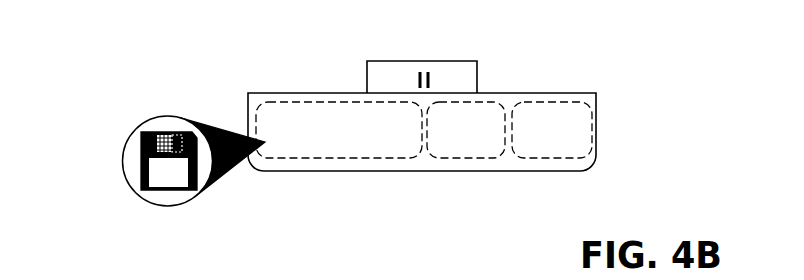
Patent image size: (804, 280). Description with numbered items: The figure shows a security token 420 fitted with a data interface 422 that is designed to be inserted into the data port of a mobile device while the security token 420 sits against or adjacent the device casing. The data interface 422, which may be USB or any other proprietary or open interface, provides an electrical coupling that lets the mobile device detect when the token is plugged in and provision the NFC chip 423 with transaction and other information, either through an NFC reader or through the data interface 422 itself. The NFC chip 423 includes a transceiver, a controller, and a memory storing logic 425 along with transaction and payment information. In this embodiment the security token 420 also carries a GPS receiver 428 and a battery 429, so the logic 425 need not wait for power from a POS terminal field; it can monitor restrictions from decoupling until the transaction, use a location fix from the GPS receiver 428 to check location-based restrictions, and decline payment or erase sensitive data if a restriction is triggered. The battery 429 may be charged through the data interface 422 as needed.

The security token 420 is at (361, 116).
The data interface 422 is at (370, 60).
The NFC chip 423 is at (327, 156).
The logic 425 is at (154, 152).
The GPS receiver 428 is at (455, 159).
The battery 429 is at (543, 159).